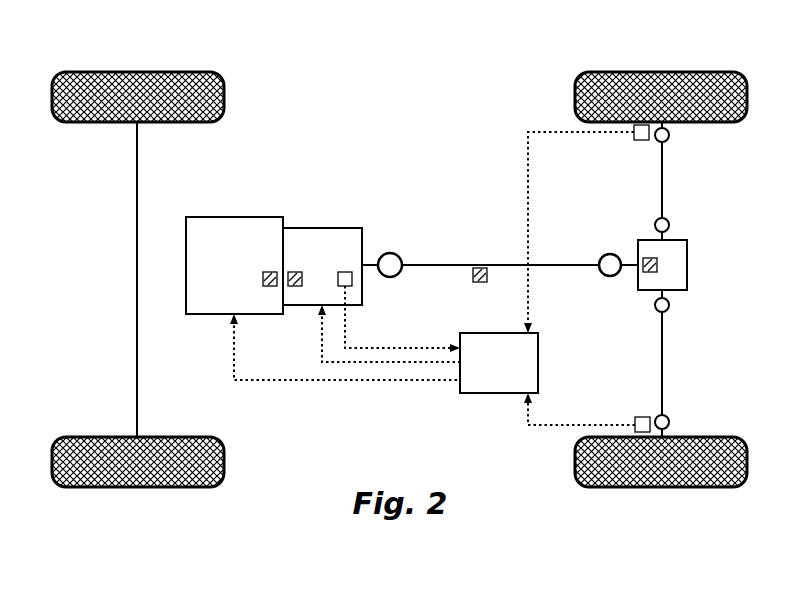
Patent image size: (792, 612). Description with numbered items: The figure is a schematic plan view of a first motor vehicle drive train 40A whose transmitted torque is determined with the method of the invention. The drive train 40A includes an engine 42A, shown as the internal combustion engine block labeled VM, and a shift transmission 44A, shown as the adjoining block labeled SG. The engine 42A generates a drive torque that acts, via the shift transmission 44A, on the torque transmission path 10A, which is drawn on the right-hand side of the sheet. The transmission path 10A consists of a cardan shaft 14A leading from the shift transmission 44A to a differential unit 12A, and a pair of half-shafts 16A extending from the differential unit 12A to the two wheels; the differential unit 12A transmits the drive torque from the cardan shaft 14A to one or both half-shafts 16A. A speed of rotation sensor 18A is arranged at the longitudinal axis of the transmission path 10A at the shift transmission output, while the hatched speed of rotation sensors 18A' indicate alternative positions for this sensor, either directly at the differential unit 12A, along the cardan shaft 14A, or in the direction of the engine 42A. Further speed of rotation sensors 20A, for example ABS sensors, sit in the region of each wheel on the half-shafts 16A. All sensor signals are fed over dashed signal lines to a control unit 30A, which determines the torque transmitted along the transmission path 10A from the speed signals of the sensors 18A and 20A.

The torque transmission path 10A is at (678, 279).
The differential unit 12A is at (688, 282).
The cardan shaft 14A is at (434, 264).
The half-shafts 16A is at (665, 175).
The speed of rotation sensor 18A is at (373, 298).
The speed of rotation sensors (alternative positions) 18A' is at (460, 308).
The speed of rotation sensors 20A is at (637, 139).
The control unit 30A is at (460, 393).
The drive train 40A is at (311, 236).
The engine 42A is at (220, 217).
The shift transmission 44A is at (293, 228).